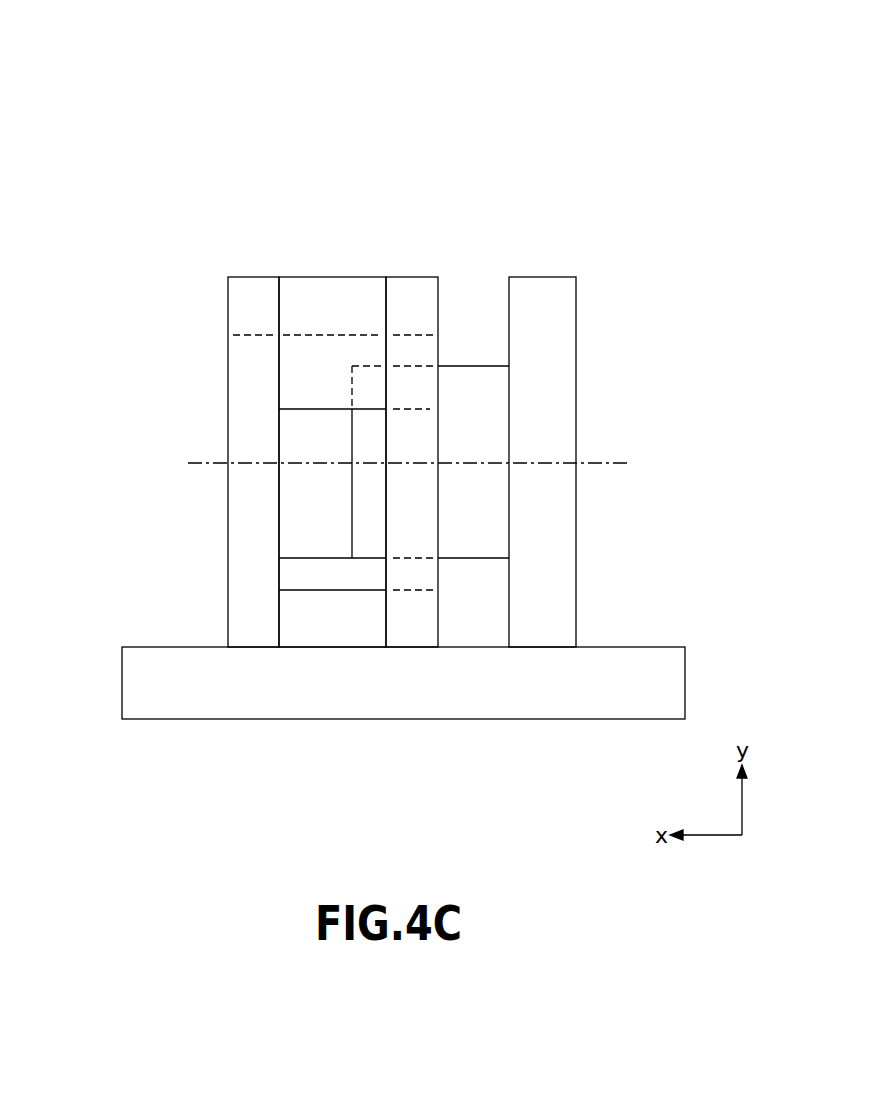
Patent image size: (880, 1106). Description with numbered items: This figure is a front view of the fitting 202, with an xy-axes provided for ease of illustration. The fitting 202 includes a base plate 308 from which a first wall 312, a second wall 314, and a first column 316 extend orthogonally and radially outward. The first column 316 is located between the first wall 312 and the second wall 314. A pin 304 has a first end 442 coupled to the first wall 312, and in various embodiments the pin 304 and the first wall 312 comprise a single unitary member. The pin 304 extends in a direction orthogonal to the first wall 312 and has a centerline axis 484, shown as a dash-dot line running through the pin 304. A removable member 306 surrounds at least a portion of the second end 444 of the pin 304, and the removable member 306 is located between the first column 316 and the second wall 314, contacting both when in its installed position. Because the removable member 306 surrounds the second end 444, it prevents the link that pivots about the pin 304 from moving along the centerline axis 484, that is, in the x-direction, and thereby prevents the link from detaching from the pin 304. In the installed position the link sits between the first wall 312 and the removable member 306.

The fitting 202 is at (647, 102).
The pin 304 is at (483, 375).
The removable member 306 is at (350, 287).
The base plate 308 is at (122, 680).
The first wall 312 is at (567, 277).
The second wall 314 is at (237, 277).
The first column 316 is at (413, 618).
The first end 442 is at (513, 460).
The second end 444 is at (350, 453).
The centerline axis 484 is at (625, 463).